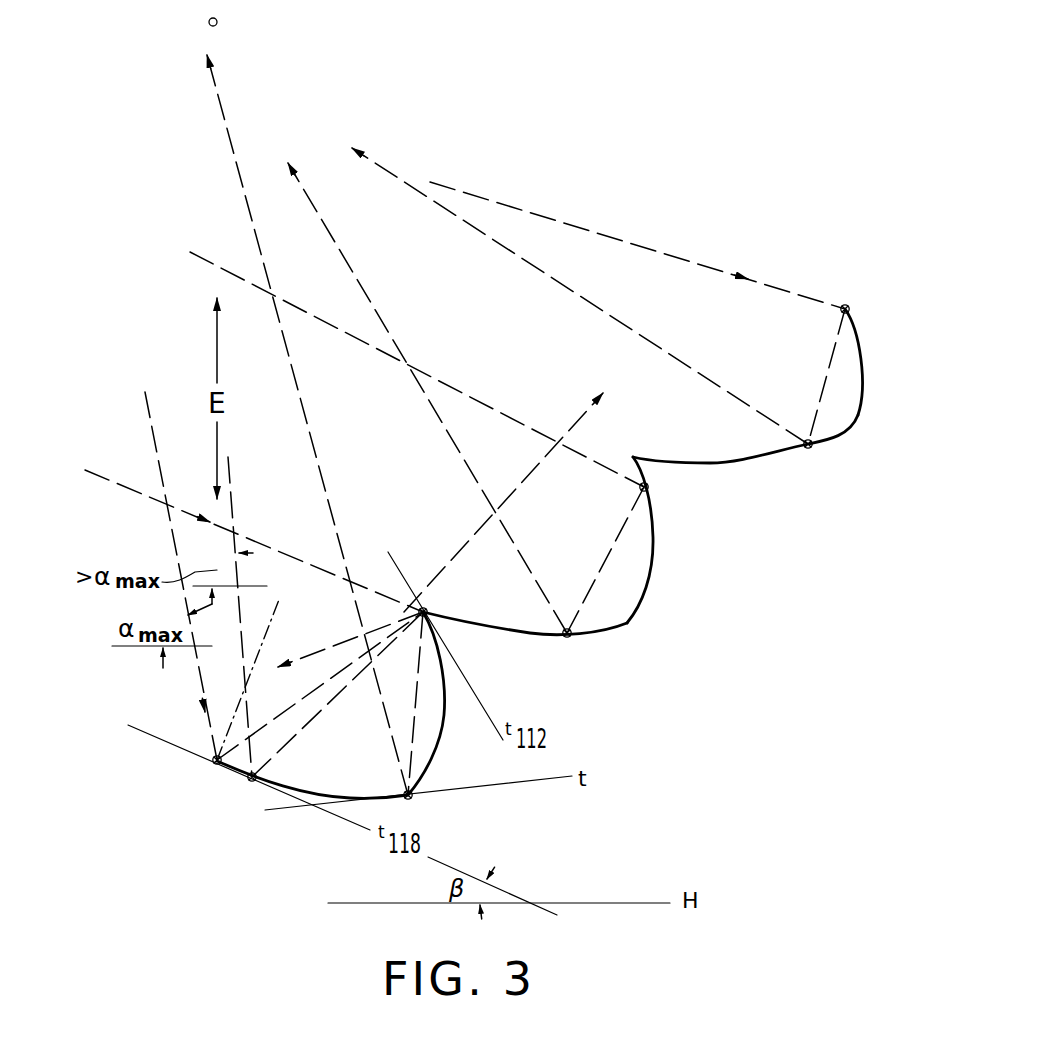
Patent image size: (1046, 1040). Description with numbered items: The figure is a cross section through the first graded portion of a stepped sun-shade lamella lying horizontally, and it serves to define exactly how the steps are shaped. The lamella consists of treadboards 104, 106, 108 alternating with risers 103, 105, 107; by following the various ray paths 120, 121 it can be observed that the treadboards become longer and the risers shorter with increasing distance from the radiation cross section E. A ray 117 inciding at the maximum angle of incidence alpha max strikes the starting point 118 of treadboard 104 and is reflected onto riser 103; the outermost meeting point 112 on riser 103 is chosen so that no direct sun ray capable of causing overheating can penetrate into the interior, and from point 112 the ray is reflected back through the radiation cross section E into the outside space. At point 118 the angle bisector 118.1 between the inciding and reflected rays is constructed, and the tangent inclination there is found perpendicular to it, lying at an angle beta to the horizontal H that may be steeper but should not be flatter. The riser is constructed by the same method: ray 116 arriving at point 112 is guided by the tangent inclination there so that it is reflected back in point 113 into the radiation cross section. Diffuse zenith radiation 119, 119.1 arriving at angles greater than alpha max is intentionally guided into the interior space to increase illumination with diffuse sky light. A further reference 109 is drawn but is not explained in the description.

The riser 103 is at (425, 770).
The treadboard 104 is at (275, 783).
The riser 105 is at (653, 553).
The treadboard 106 is at (543, 637).
The riser 107 is at (863, 373).
The treadboard 108 is at (743, 463).
The observer eye position 109 is at (209, 22).
The starting point 112 is at (427, 608).
The point 113 is at (417, 798).
The ray 116 is at (143, 495).
The ray 117 is at (175, 560).
The starting point 118 is at (213, 767).
The angle bisector 118.1 is at (252, 670).
The diffuse zenith radiation 119 is at (235, 517).
The diffuse zenith radiation 119.1 is at (510, 500).
The ray path 120 is at (215, 267).
The ray path 121 is at (463, 190).